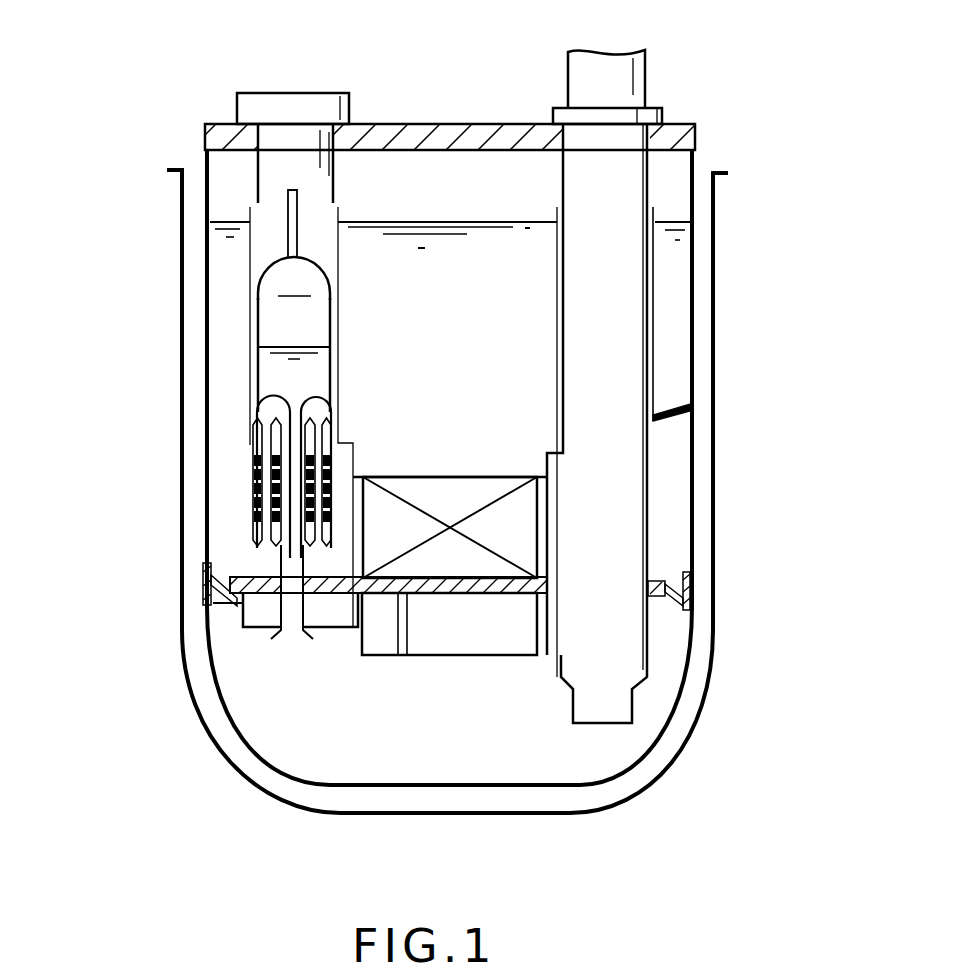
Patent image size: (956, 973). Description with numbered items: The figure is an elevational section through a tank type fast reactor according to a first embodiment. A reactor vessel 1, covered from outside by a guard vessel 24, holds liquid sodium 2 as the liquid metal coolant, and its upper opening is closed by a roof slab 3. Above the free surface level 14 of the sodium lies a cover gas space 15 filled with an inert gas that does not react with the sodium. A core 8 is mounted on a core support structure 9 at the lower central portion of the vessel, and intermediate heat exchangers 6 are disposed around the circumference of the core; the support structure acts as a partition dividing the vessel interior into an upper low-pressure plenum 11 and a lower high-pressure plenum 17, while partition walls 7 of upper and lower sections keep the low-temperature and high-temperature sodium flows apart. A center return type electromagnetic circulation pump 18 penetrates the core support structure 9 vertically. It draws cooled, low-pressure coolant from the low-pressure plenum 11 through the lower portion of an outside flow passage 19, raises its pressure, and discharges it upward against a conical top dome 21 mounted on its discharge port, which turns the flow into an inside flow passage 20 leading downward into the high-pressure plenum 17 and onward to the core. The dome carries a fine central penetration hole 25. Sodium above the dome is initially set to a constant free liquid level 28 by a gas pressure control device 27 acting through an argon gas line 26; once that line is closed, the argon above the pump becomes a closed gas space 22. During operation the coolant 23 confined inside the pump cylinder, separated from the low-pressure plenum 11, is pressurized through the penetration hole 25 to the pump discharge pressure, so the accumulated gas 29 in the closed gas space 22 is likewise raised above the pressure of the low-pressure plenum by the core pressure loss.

The reactor vessel 1 is at (690, 292).
The liquid sodium 2 is at (526, 350).
The roof slab 3 is at (678, 125).
The intermediate heat exchanger 6 is at (645, 397).
The partition wall 7 is at (668, 422).
The core 8 is at (532, 525).
The core support structure 9 is at (653, 583).
The low-pressure plenum 11 is at (671, 260).
The free surface level 14 is at (507, 222).
The cover gas space 15 is at (675, 158).
The high-pressure plenum 17 is at (243, 702).
The center return type electromagnetic circulation pump 18 is at (247, 480).
The outside flow passage 19 is at (253, 443).
The inside flow passage 20 is at (288, 555).
The top dome 21 is at (262, 390).
The closed gas space 22 is at (268, 302).
The coolant 23 is at (258, 362).
The guard vessel 24 is at (712, 642).
The central penetration hole 25 is at (253, 420).
The argon gas line 26 is at (258, 202).
The gas pressure control device 27 is at (327, 100).
The free liquid level 28 is at (288, 348).
The accumulated gas 29 is at (294, 278).